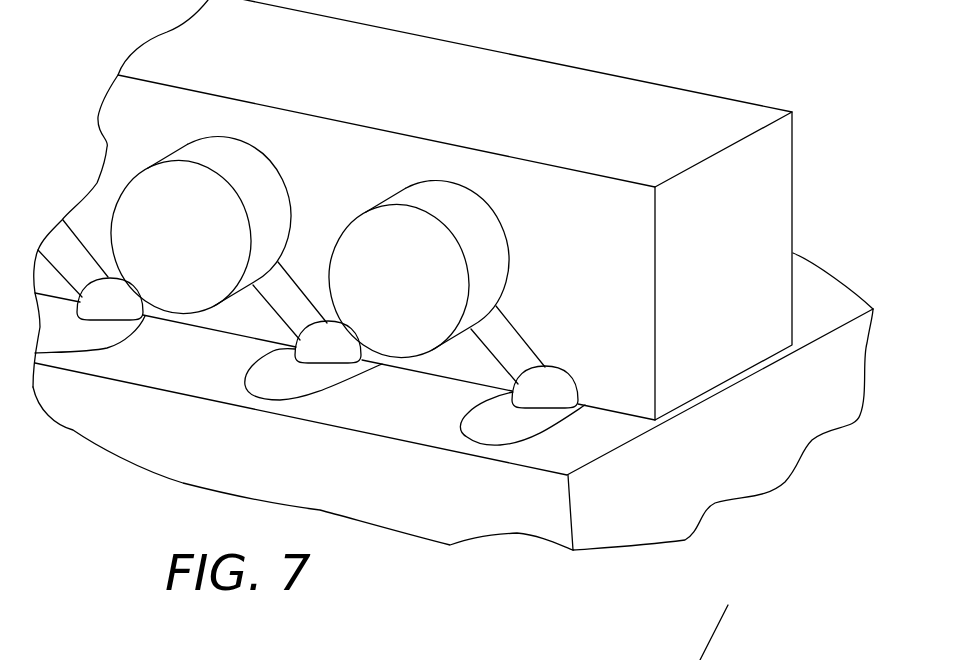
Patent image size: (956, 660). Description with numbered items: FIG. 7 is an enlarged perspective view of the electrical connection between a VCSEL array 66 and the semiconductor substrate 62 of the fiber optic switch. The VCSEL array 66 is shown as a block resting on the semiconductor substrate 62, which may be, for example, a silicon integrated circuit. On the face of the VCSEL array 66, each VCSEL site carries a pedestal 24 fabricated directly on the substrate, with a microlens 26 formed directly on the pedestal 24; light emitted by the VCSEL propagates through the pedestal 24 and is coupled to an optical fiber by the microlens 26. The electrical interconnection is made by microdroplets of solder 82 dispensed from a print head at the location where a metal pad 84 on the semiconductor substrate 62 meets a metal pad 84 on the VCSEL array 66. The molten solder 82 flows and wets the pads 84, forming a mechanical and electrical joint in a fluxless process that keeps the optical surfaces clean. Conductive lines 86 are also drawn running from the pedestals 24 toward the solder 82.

The pedestal 24 is at (302, 217).
The microlens 26 is at (134, 254).
The semiconductor substrate 62 is at (180, 438).
The VCSEL array 66 is at (573, 97).
The solder 82 is at (117, 312).
The metal pad 84 is at (307, 383).
The conductive trace 86 is at (503, 338).